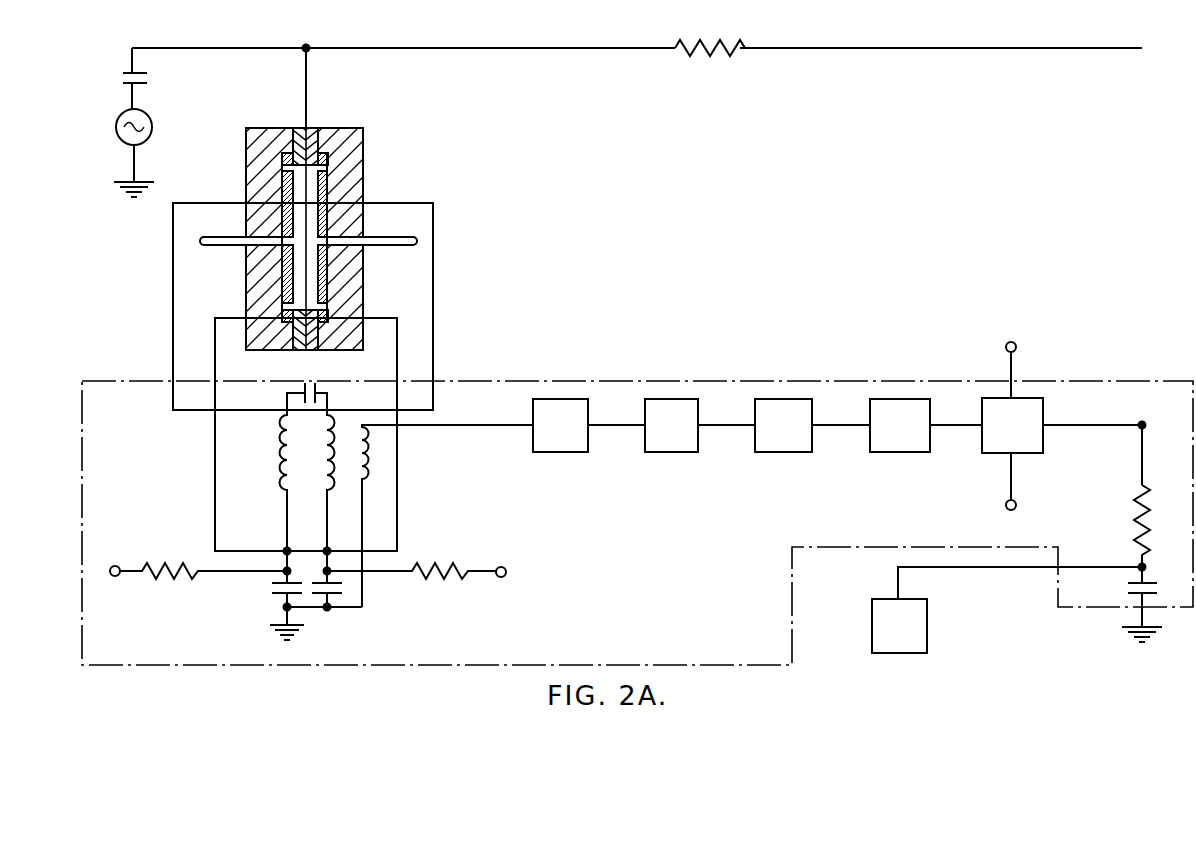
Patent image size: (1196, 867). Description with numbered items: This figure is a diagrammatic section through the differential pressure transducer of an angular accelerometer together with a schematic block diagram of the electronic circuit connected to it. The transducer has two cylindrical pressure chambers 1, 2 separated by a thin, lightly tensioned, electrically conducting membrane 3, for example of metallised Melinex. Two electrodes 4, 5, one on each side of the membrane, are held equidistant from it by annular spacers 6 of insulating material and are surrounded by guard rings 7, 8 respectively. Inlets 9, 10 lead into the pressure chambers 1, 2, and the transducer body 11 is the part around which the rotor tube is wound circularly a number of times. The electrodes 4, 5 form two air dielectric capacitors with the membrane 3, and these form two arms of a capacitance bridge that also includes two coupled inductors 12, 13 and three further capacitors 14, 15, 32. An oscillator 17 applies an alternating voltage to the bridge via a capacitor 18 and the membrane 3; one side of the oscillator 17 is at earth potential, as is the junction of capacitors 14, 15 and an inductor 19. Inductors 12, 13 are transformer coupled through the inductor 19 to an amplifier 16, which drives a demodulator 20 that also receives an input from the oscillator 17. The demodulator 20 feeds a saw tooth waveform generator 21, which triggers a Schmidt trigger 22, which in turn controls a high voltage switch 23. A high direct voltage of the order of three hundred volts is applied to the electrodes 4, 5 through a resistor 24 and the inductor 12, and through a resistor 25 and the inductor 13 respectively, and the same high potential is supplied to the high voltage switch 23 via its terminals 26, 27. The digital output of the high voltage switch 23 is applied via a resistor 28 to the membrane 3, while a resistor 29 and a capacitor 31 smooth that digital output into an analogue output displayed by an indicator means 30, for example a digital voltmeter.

The pressure chamber 1 is at (293, 185).
The pressure chamber 2 is at (310, 190).
The membrane 3 is at (307, 293).
The electrode 4 is at (282, 267).
The electrode 5 is at (325, 270).
The annular spacers 6 is at (298, 147).
The guard ring 7 is at (283, 162).
The guard ring 8 is at (327, 162).
The inlet 9 is at (223, 238).
The inlet 10 is at (393, 238).
The body 11 is at (258, 297).
The inductor 12 is at (283, 460).
The inductor 13 is at (333, 477).
The capacitor 14 is at (275, 593).
The capacitor 15 is at (340, 595).
The amplifier 16 is at (563, 407).
The oscillator 17 is at (117, 123).
The capacitor 18 is at (148, 84).
The inductor 19 is at (370, 452).
The demodulator 20 is at (668, 407).
The saw tooth waveform generator 21 is at (775, 407).
The Schmidt trigger 22 is at (892, 407).
The high voltage switch 23 is at (1030, 408).
The resistor 24 is at (172, 569).
The resistor 25 is at (430, 575).
The terminal 26 is at (1006, 342).
The terminal 27 is at (1004, 506).
The resistor 28 is at (717, 52).
The resistor 29 is at (1138, 518).
The indicator means 30 is at (920, 630).
The capacitor 31 is at (1128, 592).
The capacitor 32 is at (318, 394).